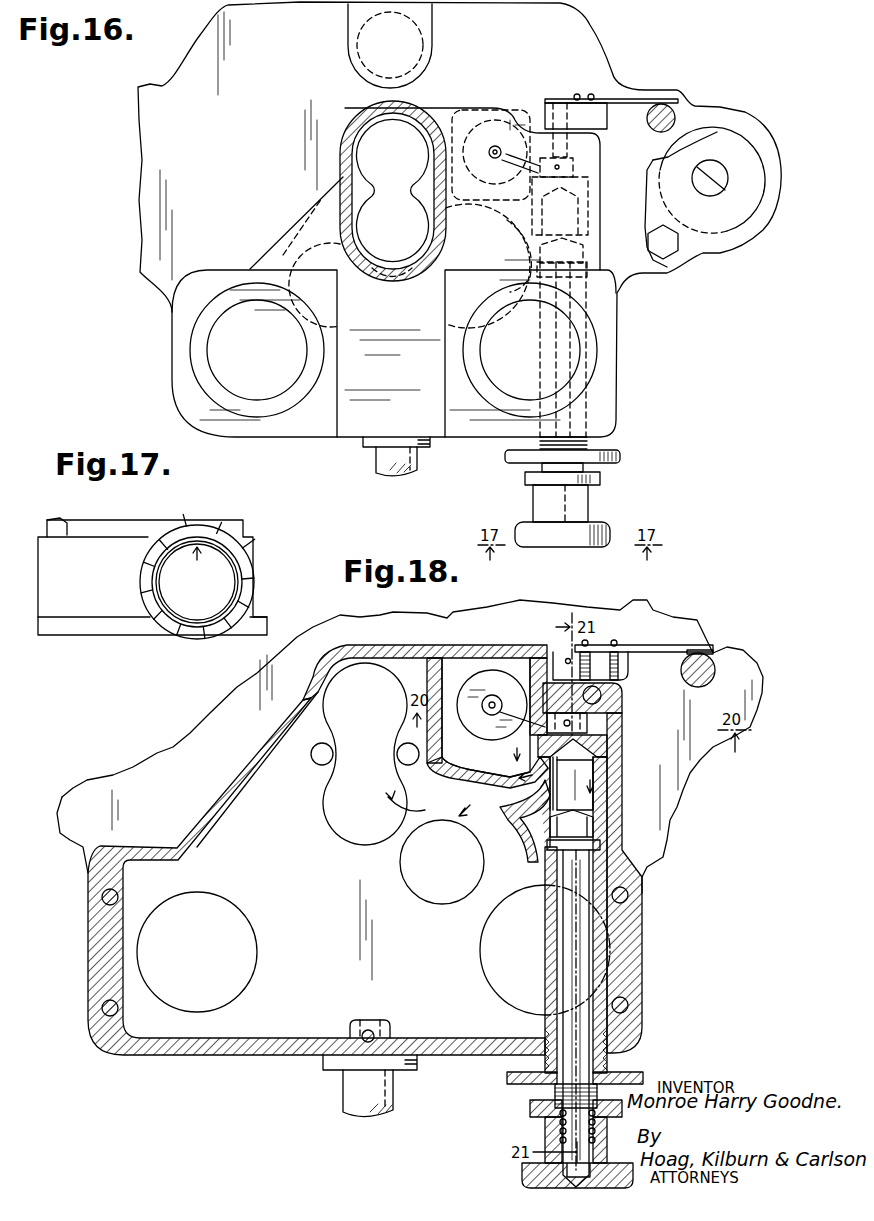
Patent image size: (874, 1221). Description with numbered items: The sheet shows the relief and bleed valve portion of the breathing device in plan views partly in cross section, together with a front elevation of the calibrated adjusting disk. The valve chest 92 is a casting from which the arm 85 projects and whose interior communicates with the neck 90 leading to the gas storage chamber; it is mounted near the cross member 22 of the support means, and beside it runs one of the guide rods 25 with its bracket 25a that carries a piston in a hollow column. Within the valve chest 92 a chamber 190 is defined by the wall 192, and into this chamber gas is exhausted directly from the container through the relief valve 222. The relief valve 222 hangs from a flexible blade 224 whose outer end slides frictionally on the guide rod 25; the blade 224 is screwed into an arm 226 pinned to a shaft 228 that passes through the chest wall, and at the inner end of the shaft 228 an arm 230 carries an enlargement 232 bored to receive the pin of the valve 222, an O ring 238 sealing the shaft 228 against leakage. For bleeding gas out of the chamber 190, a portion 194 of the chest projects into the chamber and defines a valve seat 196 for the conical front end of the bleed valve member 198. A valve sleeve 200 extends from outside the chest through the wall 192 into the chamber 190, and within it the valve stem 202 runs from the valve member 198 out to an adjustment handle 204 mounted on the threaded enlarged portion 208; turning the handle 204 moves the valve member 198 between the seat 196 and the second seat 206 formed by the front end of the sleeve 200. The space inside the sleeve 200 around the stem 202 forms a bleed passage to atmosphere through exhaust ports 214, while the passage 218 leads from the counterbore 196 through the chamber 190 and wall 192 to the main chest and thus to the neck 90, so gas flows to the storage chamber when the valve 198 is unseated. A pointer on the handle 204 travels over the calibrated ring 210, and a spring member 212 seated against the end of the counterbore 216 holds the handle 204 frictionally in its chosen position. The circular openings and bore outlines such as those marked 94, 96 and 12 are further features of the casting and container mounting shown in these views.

In FIG. 16, the upper boss 12 is at (348, 20).
In FIG. 16, the cross member 22 is at (590, 27).
In FIG. 17, the cross member 22 is at (65, 623).
In FIG. 18, the cross member 22 is at (633, 613).
In FIG. 16, the rod 25 is at (673, 118).
In FIG. 18, the rod 25 is at (708, 664).
In FIG. 16, the bracket 25a is at (733, 135).
In FIG. 16, the arm 85 is at (377, 460).
In FIG. 18, the arm 85 is at (350, 1096).
In FIG. 16, the neck 90 is at (353, 115).
In FIG. 16, the valve chest 92 is at (288, 234).
In FIG. 17, the valve chest 92 is at (55, 518).
In FIG. 18, the valve chest 92 is at (280, 732).
In FIG. 16, the left bore 94 is at (270, 338).
In FIG. 18, the left bore 94 is at (208, 926).
In FIG. 16, the bore 96 is at (419, 303).
In FIG. 18, the bore 96 is at (453, 885).
In FIG. 18, the chamber 190 is at (460, 670).
In FIG. 18, the wall 192 is at (422, 660).
In FIG. 16, the portion 194 is at (587, 183).
In FIG. 18, the portion 194 is at (607, 783).
In FIG. 16, the valve seat 196 is at (590, 205).
In FIG. 18, the valve seat 196 is at (590, 768).
In FIG. 16, the valve member 198 is at (586, 252).
In FIG. 18, the valve member 198 is at (595, 830).
In FIG. 16, the valve sleeve 200 is at (588, 365).
In FIG. 18, the valve sleeve 200 is at (608, 918).
In FIG. 16, the valve stem 202 is at (572, 335).
In FIG. 18, the valve stem 202 is at (573, 956).
In FIG. 16, the adjustment handle 204 is at (608, 520).
In FIG. 17, the adjustment handle 204 is at (230, 587).
In FIG. 18, the adjustment handle 204 is at (522, 1175).
In FIG. 16, the valve seat 206 is at (589, 270).
In FIG. 18, the valve seat 206 is at (601, 845).
In FIG. 18, the enlarged portion 208 is at (563, 1090).
In FIG. 16, the calibrated ring 210 is at (613, 463).
In FIG. 17, the calibrated ring 210 is at (215, 525).
In FIG. 18, the calibrated ring 210 is at (640, 1087).
In FIG. 18, the spring member 212 is at (553, 1134).
In FIG. 18, the exhaust ports 214 is at (604, 1064).
In FIG. 18, the counterbore 216 is at (560, 1122).
In FIG. 16, the passage 218 is at (514, 234).
In FIG. 18, the passage 218 is at (487, 780).
In FIG. 16, the relief valve 222 is at (478, 106).
In FIG. 18, the relief valve 222 is at (470, 725).
In FIG. 16, the flexible blade 224 is at (619, 100).
In FIG. 18, the flexible blade 224 is at (667, 647).
In FIG. 16, the arm 226 is at (606, 130).
In FIG. 18, the arm 226 is at (630, 668).
In FIG. 16, the shaft 228 is at (560, 100).
In FIG. 16, the arm 230 is at (511, 179).
In FIG. 18, the arm 230 is at (513, 680).
In FIG. 16, the enlargement 232 is at (497, 142).
In FIG. 18, the O ring 238 is at (623, 704).